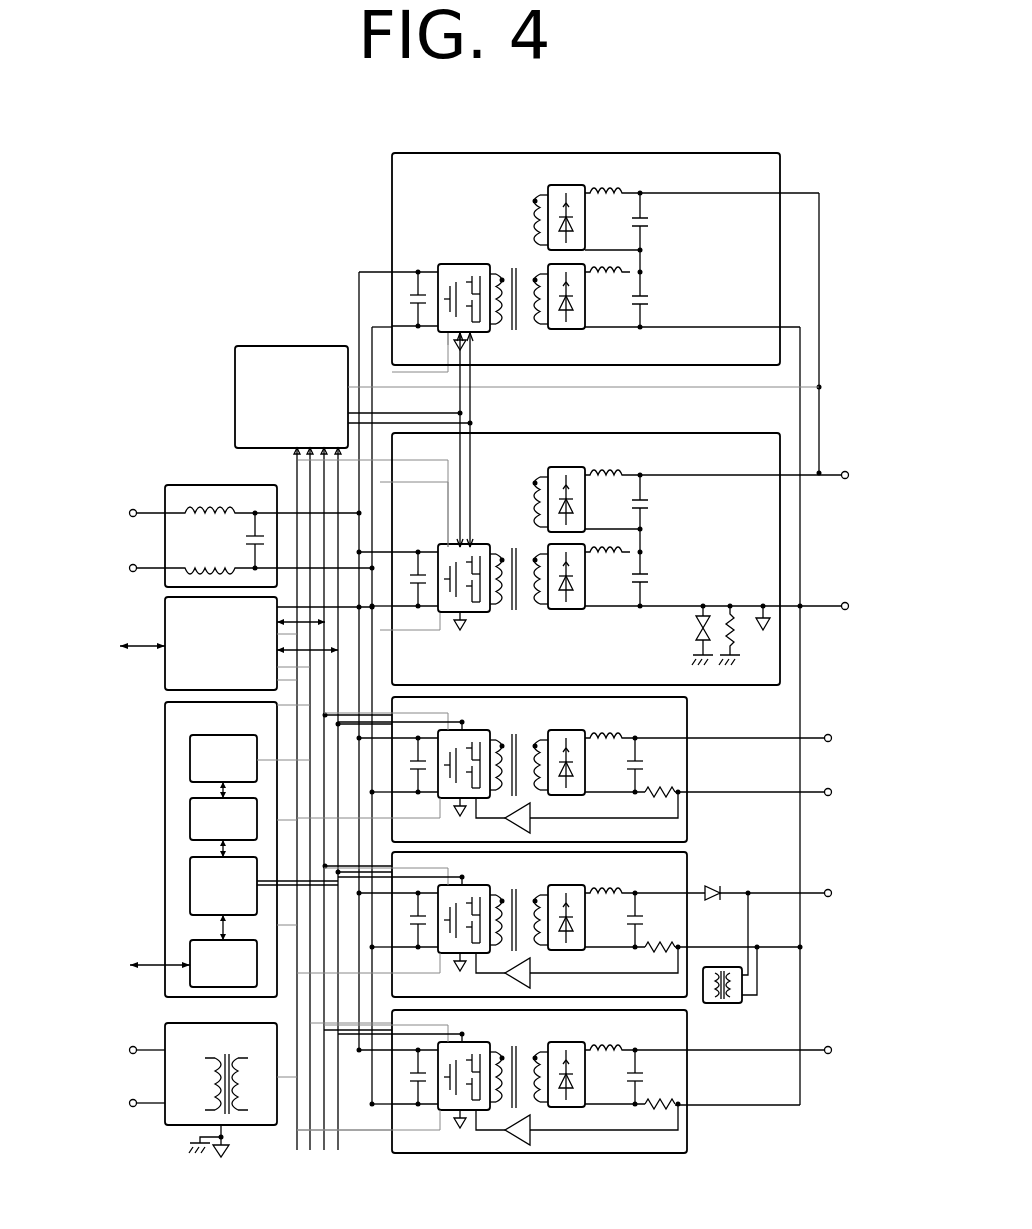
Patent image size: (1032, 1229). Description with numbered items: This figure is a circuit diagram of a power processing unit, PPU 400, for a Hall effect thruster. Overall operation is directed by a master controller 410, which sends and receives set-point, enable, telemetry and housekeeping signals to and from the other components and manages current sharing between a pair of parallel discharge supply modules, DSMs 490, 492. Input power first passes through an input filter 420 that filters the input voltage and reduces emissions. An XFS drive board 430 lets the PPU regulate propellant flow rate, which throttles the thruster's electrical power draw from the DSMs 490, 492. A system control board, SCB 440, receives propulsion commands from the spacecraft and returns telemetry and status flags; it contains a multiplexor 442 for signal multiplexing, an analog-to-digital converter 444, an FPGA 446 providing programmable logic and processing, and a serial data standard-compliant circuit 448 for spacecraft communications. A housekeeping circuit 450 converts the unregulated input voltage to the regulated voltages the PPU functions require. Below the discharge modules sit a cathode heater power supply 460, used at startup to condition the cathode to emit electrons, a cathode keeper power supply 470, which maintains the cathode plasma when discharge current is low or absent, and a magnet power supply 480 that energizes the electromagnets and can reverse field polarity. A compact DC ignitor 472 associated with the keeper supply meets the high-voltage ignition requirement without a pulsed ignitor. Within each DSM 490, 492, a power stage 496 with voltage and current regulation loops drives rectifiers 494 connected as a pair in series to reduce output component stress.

The PPU 400 is at (160, 103).
The master controller 410 is at (285, 345).
The input filter 420 is at (210, 483).
The XFS drive board 430 is at (165, 620).
The system control board 440 is at (165, 708).
The multiplexor 442 is at (190, 752).
The analog-to-digital converter 444 is at (190, 817).
The field programmable gate array 446 is at (190, 880).
The RS-422 serial data standard-compliant circuit 448 is at (190, 943).
The housekeeping circuit 450 is at (165, 1028).
The cathode heater power supply 460 is at (687, 1125).
The cathode keeper power supply 470 is at (687, 872).
The DC ignitor 472 is at (745, 1003).
The magnet power supply 480 is at (687, 722).
The DSM 490 is at (780, 542).
The DSM 492 is at (392, 213).
The rectifiers 494 is at (585, 228).
The power stage 496 is at (462, 262).